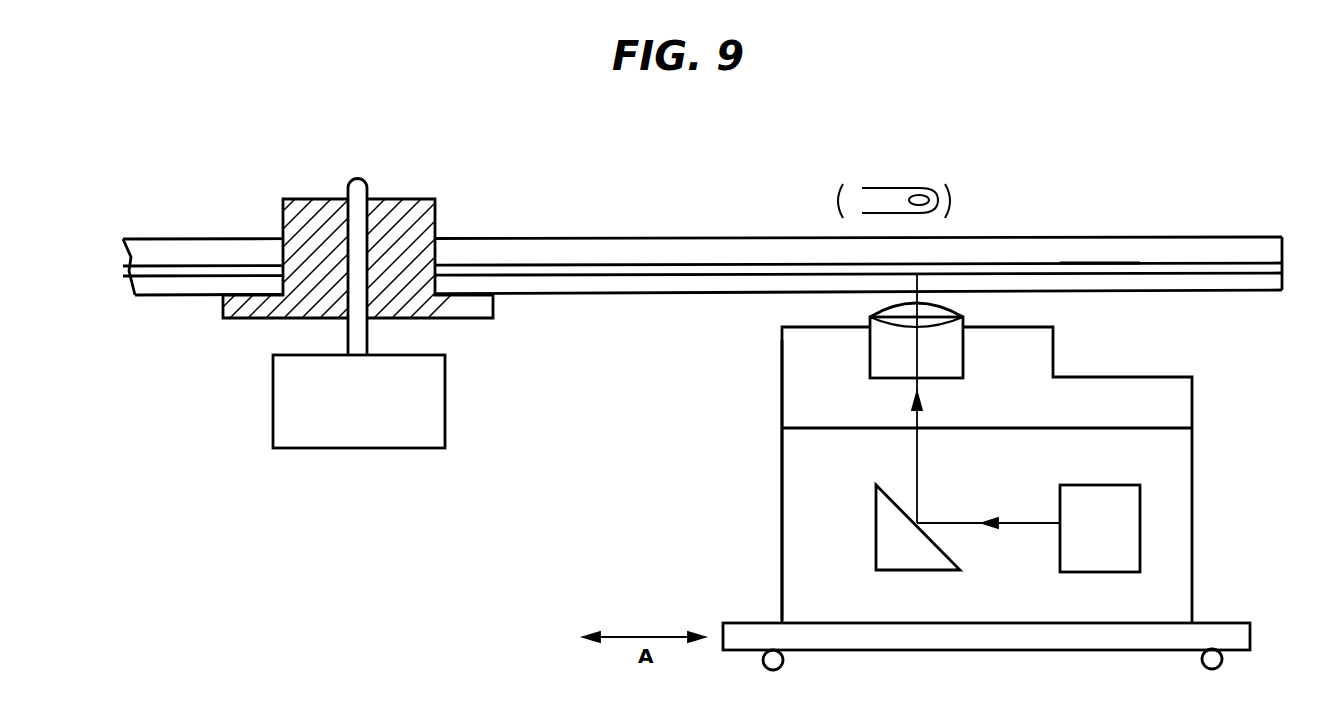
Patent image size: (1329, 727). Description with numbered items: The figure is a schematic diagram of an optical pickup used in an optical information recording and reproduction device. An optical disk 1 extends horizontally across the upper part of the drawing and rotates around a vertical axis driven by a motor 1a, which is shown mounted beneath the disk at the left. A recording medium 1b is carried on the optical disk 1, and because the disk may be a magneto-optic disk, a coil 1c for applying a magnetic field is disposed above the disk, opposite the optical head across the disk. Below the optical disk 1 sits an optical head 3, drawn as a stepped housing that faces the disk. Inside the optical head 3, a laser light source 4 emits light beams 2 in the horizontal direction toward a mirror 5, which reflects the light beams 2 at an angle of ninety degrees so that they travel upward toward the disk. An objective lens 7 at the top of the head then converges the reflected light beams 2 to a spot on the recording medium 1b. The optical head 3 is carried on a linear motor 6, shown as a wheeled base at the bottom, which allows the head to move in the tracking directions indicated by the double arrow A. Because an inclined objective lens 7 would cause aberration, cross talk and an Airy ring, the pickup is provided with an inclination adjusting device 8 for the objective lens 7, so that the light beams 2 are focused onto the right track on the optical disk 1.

The optical disk 1 is at (1002, 237).
The motor 1a is at (445, 387).
The recording medium 1b is at (1093, 262).
The coil 1c is at (892, 188).
The light beams 2 is at (1015, 527).
The optical head 3 is at (1210, 500).
The laser light source 4 is at (1107, 542).
The mirror 5 is at (875, 553).
The linear motor 6 is at (1243, 633).
The objective lens 7 is at (870, 320).
The inclination adjusting device 8 is at (768, 393).